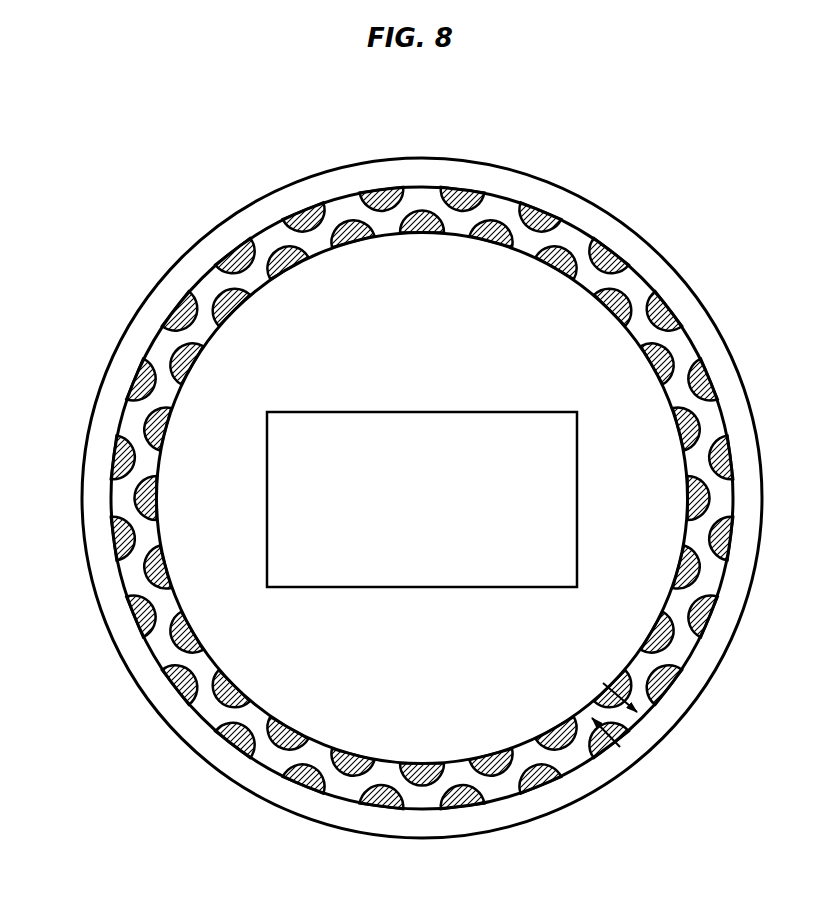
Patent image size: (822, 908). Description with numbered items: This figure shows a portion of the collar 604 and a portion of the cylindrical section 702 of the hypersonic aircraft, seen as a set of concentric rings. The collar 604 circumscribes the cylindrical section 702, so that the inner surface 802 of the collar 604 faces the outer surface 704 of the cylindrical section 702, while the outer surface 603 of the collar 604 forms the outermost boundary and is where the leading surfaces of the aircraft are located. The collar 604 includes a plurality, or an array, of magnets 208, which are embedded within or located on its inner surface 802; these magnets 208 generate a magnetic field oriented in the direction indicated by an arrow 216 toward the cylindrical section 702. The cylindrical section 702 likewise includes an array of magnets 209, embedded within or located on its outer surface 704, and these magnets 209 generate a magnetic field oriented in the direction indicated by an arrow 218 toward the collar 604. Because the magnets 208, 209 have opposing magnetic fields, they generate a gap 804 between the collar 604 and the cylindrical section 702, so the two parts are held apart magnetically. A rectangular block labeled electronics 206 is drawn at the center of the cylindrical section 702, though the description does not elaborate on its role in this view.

The outer surface 603 is at (242, 162).
The collar 604 is at (494, 164).
The cylindrical section 702 is at (603, 368).
The outer surface 704 is at (131, 520).
The gap 804 is at (565, 235).
The inner surface 802 is at (343, 793).
The magnets 208 is at (241, 742).
The magnets 209 is at (173, 643).
The electronics 206 is at (402, 531).
The arrow 216 is at (617, 745).
The arrow 218 is at (657, 706).